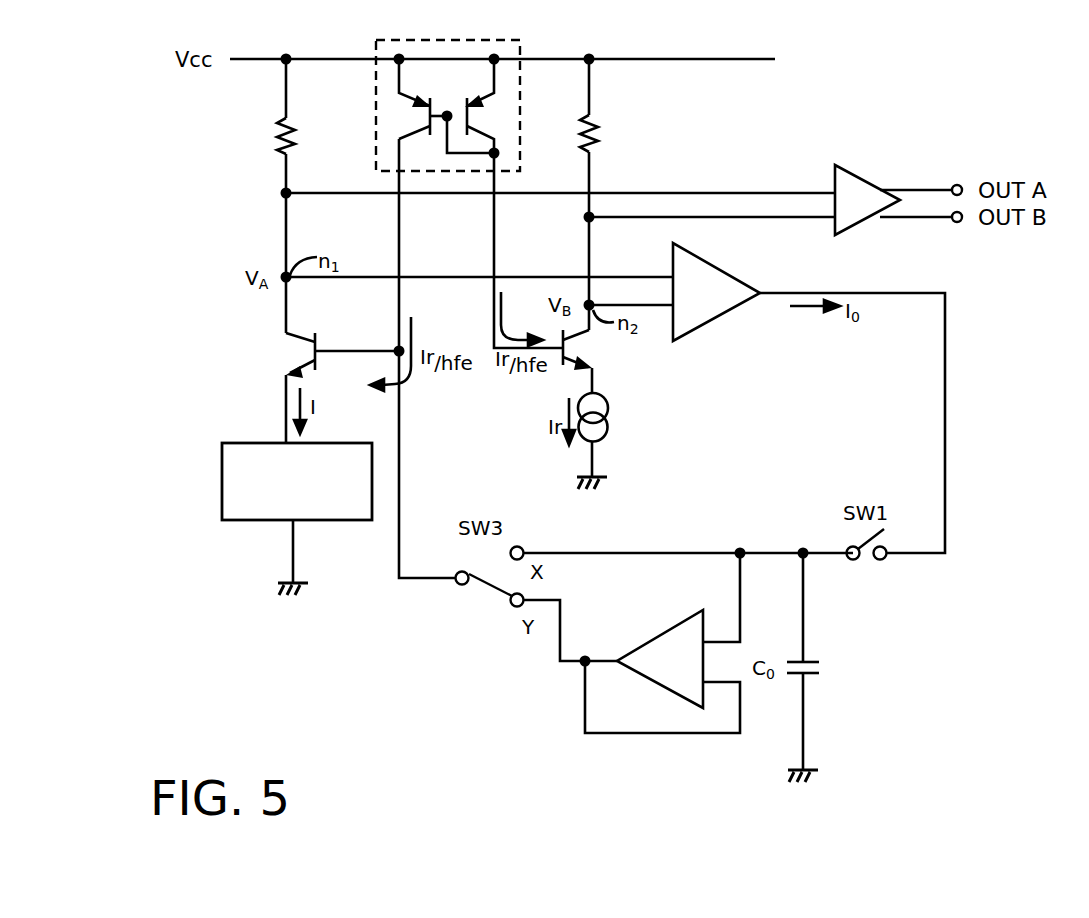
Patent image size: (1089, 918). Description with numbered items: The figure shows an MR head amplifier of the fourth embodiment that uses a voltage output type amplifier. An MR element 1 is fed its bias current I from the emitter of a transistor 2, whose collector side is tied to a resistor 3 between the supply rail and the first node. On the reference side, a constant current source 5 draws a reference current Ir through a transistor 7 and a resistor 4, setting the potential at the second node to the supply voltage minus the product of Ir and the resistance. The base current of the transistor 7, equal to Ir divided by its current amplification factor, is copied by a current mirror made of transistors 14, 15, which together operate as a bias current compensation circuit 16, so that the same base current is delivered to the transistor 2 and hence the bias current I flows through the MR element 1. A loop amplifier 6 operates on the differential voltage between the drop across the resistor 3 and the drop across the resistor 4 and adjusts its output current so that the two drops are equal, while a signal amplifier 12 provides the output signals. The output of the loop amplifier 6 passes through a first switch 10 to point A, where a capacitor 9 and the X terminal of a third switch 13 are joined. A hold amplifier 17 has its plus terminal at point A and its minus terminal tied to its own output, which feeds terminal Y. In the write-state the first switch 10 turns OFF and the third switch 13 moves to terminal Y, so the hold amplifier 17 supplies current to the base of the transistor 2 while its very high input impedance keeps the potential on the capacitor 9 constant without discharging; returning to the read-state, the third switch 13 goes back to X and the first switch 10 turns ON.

The MR element 1 is at (221, 490).
The transistor 2 is at (297, 357).
The resistor 3 is at (281, 142).
The resistor 4 is at (597, 134).
The constant current source 5 is at (608, 425).
The loop amplifier 6 is at (713, 323).
The transistor 7 is at (583, 350).
The capacitor 9 is at (826, 667).
The first switch 10 is at (862, 563).
The signal amplifier 12 is at (858, 173).
The third switch 13 is at (492, 598).
The transistor 14 is at (402, 124).
The transistor 15 is at (480, 120).
The bias current compensation circuit 16 is at (452, 39).
The hold amplifier 17 is at (662, 636).